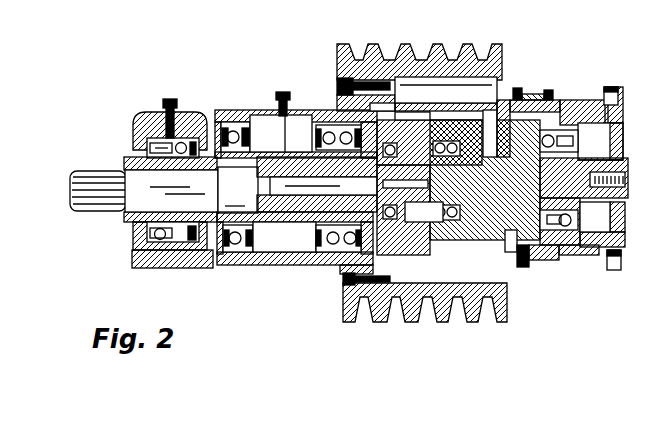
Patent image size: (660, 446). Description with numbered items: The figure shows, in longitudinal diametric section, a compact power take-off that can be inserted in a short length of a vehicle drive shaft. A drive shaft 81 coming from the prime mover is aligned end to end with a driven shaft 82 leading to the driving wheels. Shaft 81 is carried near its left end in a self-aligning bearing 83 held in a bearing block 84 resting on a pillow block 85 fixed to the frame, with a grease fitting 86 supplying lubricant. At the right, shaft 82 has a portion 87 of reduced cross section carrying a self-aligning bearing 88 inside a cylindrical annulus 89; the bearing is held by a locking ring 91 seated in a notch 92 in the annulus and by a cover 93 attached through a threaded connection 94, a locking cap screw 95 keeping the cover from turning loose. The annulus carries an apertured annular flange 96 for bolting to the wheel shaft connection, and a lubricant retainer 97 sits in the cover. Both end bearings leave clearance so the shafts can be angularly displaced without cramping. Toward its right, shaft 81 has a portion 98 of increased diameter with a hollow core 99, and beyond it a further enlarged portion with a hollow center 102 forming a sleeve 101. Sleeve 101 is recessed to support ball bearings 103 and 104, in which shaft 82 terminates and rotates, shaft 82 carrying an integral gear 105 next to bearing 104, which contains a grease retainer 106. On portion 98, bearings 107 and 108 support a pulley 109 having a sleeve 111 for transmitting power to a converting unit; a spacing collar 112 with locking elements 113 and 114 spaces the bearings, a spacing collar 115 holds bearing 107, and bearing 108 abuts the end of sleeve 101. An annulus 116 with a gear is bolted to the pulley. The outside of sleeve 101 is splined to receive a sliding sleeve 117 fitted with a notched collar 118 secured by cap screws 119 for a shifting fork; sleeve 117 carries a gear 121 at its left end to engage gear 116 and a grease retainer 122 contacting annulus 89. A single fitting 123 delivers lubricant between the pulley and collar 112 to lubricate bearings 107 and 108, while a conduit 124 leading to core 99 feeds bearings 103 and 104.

The drive shaft 81 is at (134, 218).
The driven shaft 82 is at (628, 164).
The self-aligning bearing 83 is at (152, 118).
The bearing block 84 is at (190, 114).
The pillow block 85 is at (190, 268).
The grease fitting 86 is at (171, 99).
The portion of reduced cross section 87 is at (595, 217).
The bearing 88 is at (588, 248).
The cylindrical annulus 89 is at (566, 255).
The locking ring 91 is at (600, 141).
The notch 92 is at (582, 122).
The cover 93 is at (530, 267).
The threaded connection 94 is at (540, 261).
The locking cap screw 95 is at (512, 252).
The annular flange 96 is at (621, 253).
The lubricant retainer 97 is at (600, 152).
The portion of increased diameter 98 is at (269, 237).
The hollow core 99 is at (308, 197).
The sleeve 101 is at (447, 226).
The hollow center 102 is at (438, 219).
The bearing 103 is at (374, 298).
The bearing 104 is at (470, 226).
The integral gear 105 is at (488, 226).
The grease retainer 106 is at (490, 112).
The bearing 107 is at (238, 110).
The bearing 108 is at (332, 124).
The pulley 109 is at (385, 62).
The sleeve 111 is at (276, 258).
The spacing collar 112 is at (281, 133).
The locking element 113 is at (256, 124).
The locking element 114 is at (296, 133).
The spacing collar 115 is at (138, 207).
The annulus with gear 116 is at (378, 102).
The sliding sleeve 117 is at (517, 88).
The notched collar 118 is at (547, 90).
The cap screw 119 is at (530, 94).
The gear 121 is at (407, 98).
The grease retainer 122 is at (557, 100).
The fitting 123 is at (286, 92).
The conduit 124 is at (256, 180).